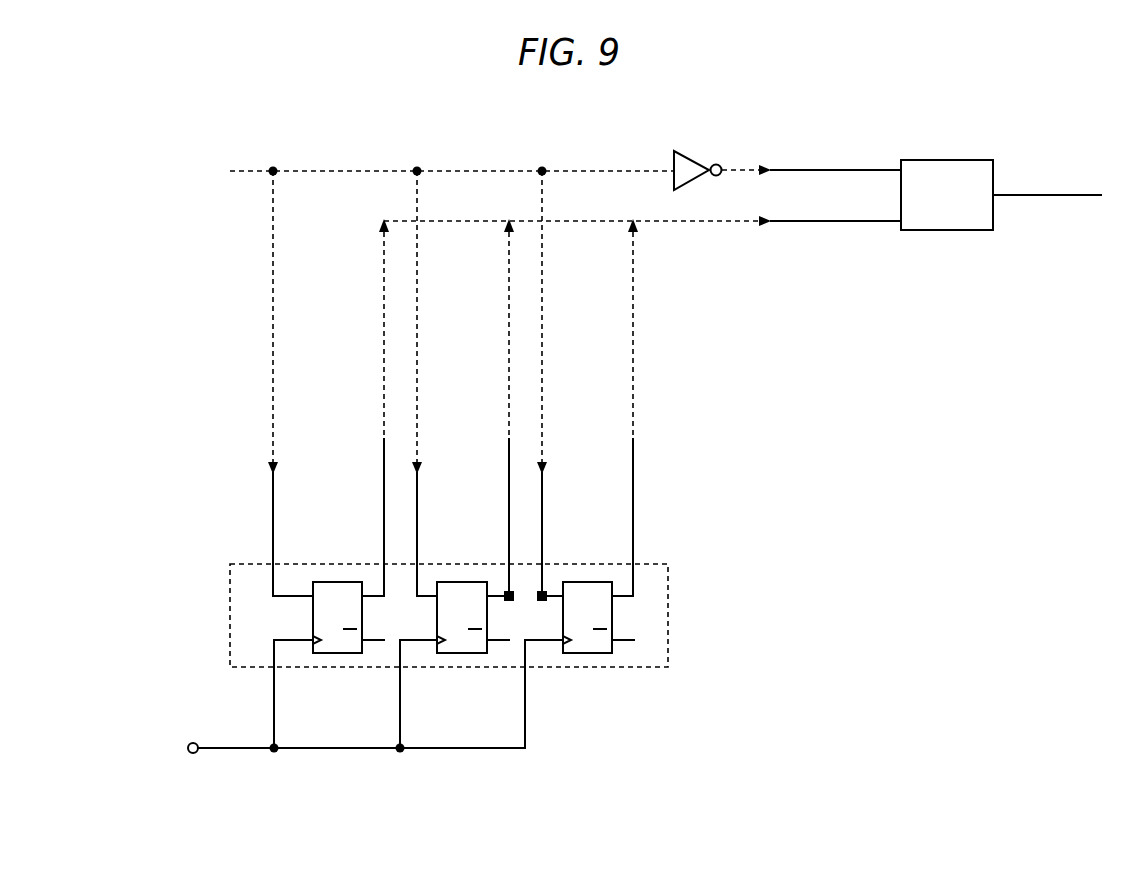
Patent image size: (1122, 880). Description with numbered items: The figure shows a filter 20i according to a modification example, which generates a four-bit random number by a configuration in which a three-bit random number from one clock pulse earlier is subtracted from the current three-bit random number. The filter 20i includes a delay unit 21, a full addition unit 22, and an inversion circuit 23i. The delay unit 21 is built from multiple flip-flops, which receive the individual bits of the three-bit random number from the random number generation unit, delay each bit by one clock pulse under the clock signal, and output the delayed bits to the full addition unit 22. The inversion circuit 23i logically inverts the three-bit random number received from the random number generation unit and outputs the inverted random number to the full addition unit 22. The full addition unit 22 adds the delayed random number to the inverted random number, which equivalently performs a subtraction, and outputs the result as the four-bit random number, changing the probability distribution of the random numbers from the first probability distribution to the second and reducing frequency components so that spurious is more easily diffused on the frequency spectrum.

The filter 20i is at (710, 498).
The delay unit 21 is at (668, 616).
The full addition unit 22 is at (944, 160).
The inversion circuit 23i is at (686, 166).